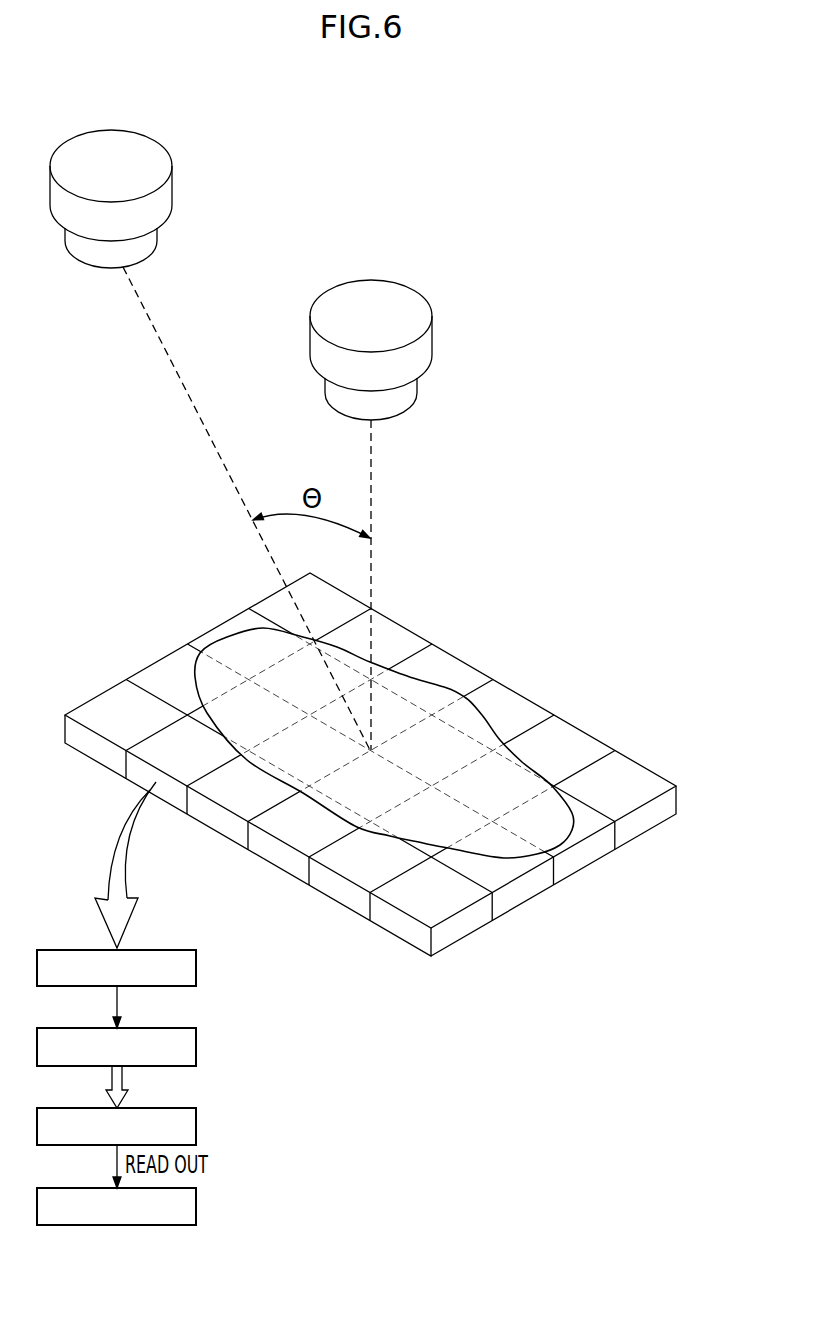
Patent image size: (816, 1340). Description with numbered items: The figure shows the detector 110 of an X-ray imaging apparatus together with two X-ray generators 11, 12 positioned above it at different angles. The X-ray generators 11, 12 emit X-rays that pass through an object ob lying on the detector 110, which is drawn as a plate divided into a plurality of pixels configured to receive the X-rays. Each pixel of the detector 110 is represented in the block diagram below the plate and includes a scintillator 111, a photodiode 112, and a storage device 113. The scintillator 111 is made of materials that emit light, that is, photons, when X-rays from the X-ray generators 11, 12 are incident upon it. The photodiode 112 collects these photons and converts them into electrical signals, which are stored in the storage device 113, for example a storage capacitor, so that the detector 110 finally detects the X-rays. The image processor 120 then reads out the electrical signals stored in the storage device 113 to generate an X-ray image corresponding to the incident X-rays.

The X-ray generator 11 is at (403, 298).
The X-ray generator 12 is at (143, 148).
The detector 110 is at (678, 800).
The object ob is at (480, 728).
The scintillator 111 is at (197, 968).
The photodiode 112 is at (197, 1047).
The storage device 113 is at (197, 1127).
The image processor 120 is at (197, 1207).